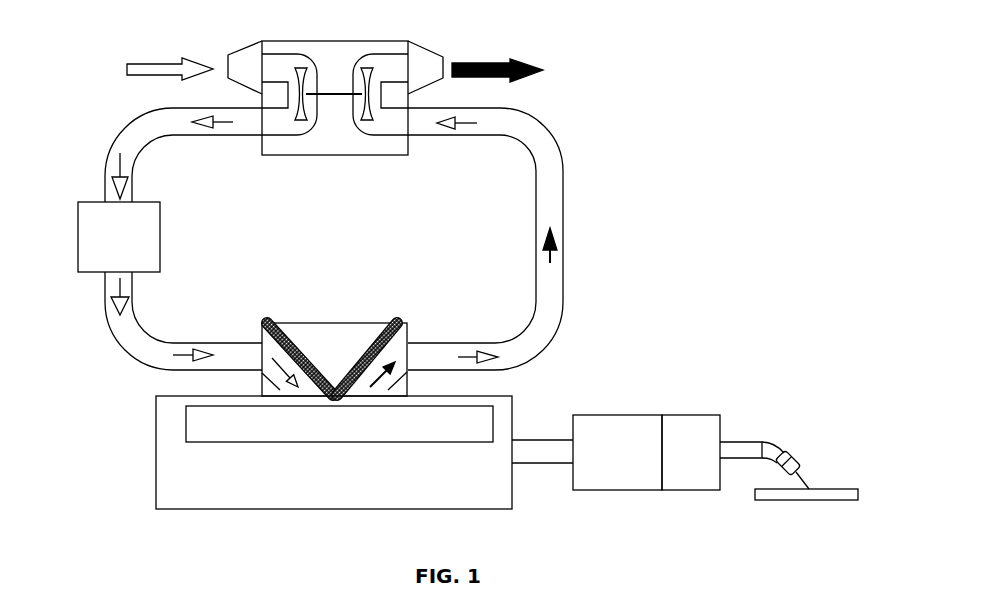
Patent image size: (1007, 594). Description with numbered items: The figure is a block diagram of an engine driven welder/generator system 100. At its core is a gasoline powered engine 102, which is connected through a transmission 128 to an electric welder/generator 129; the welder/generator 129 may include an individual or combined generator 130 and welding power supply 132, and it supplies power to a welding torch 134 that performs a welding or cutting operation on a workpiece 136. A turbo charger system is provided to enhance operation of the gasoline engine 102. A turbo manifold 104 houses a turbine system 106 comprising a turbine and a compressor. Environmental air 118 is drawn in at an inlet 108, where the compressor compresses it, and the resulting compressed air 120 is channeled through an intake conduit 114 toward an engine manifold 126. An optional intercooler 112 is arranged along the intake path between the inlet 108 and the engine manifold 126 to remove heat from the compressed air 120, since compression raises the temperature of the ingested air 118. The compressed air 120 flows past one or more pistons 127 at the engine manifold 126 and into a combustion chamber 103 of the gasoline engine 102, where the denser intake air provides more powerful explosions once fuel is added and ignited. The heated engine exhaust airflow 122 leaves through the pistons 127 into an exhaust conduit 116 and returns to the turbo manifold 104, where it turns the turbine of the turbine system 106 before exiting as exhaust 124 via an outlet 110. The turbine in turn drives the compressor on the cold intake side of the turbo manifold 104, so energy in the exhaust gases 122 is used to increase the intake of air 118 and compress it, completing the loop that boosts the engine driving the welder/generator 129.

The engine driven welder/generator system 100 is at (577, 63).
The gasoline powered engine 102 is at (334, 452).
The combustion chamber 103 is at (339, 424).
The turbo manifold 104 is at (313, 40).
The turbine system 106 is at (338, 74).
The inlet 108 is at (240, 50).
The outlet 110 is at (432, 52).
The intercooler 112 is at (160, 225).
The intake conduit 114 is at (168, 138).
The exhaust conduit 116 is at (507, 138).
The air 118 is at (173, 75).
The compressed air 120 is at (120, 157).
The engine exhaust airflow 122 is at (553, 257).
The exhaust 124 is at (488, 77).
The engine manifold 126 is at (328, 323).
The pistons 127 is at (273, 322).
The transmission 128 is at (537, 465).
The electric welder/generator 129 is at (647, 434).
The generator 130 is at (617, 452).
The welding power supply 132 is at (691, 452).
The welding torch 134 is at (788, 443).
The workpiece 136 is at (785, 500).